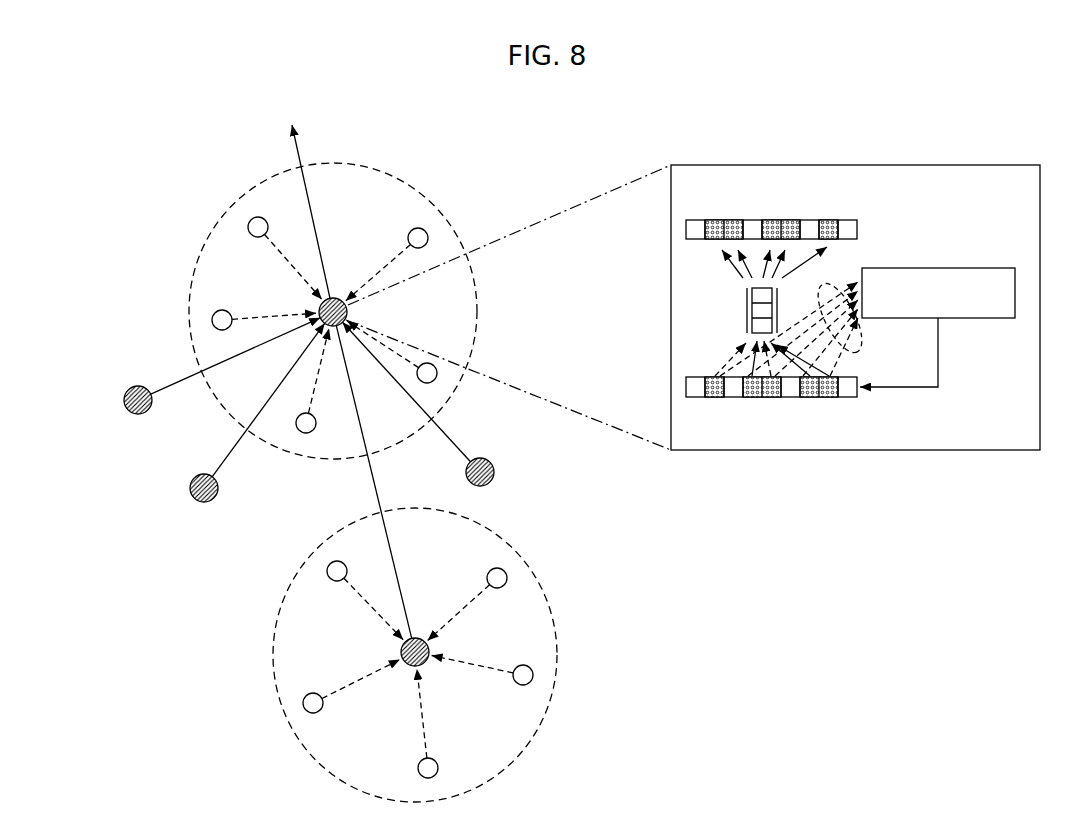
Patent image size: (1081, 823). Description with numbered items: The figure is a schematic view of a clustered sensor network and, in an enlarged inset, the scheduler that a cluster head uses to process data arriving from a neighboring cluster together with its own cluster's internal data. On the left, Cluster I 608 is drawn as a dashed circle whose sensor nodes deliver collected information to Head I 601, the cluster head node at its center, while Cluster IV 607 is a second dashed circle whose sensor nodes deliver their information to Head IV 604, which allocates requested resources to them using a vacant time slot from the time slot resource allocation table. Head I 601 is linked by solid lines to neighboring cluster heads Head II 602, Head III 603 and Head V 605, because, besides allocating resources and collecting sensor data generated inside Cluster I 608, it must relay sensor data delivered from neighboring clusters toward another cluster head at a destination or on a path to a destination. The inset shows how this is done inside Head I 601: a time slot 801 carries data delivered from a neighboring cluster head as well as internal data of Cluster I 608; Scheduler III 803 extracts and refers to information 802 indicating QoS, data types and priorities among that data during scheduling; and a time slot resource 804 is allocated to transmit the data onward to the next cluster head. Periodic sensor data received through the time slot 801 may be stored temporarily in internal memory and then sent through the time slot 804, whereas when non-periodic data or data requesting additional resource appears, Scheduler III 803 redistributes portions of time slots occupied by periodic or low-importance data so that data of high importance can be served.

The Head I 601 is at (358, 312).
The Head II 602 is at (99, 405).
The Head III 603 is at (165, 494).
The Head IV 604 is at (400, 652).
The Head V 605 is at (519, 474).
The Cluster IV 607 is at (550, 607).
The Cluster I 608 is at (408, 187).
The time slot 801 is at (762, 398).
The information indicating QoS, data types and priorities 802 is at (858, 348).
The Scheduler III 803 is at (940, 268).
The time slot resource 804 is at (762, 220).